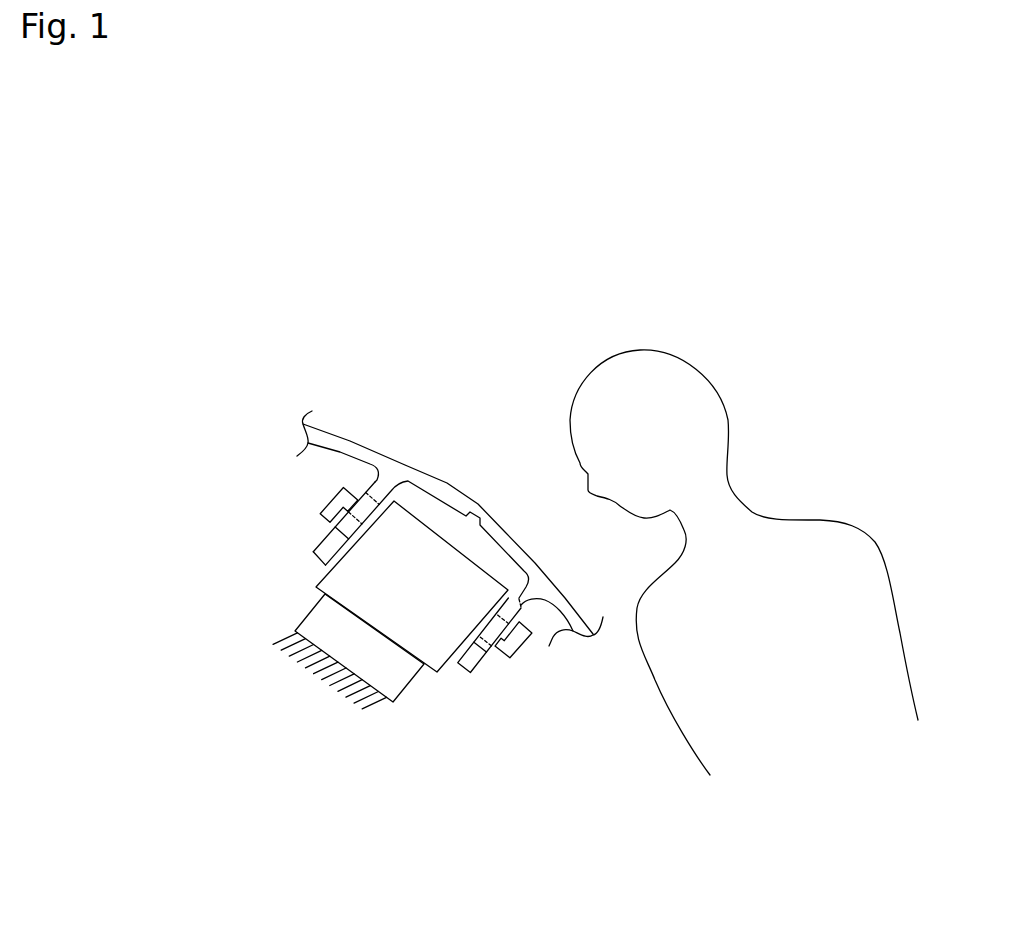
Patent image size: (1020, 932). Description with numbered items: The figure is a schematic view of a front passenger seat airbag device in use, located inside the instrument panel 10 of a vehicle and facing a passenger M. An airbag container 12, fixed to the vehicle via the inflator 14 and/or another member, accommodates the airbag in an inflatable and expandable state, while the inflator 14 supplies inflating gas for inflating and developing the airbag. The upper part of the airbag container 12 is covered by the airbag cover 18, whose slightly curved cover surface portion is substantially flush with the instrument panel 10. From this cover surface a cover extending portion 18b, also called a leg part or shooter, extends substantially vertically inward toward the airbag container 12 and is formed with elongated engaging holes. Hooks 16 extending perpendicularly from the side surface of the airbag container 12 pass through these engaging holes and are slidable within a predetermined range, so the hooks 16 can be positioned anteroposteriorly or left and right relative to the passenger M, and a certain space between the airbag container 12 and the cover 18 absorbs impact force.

The instrument panel 10 is at (345, 437).
The airbag container 12 is at (443, 664).
The inflator 14 is at (311, 613).
The hooks 16 is at (518, 650).
The airbag cover 18 is at (456, 486).
The cover extending portion 18b is at (323, 540).
The passenger M is at (700, 368).